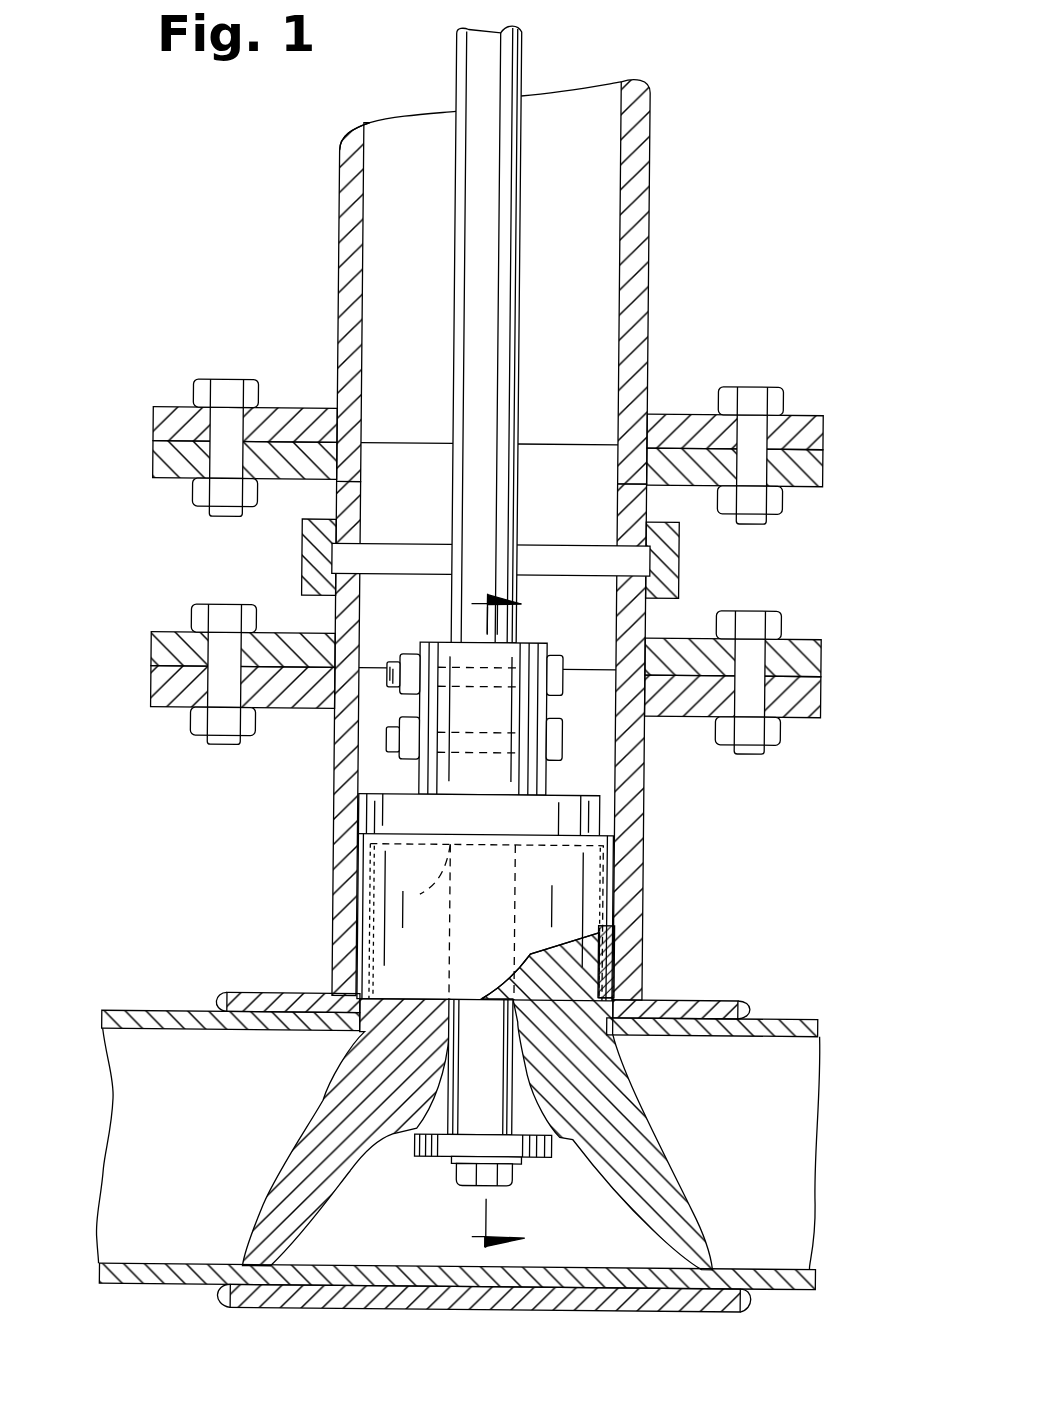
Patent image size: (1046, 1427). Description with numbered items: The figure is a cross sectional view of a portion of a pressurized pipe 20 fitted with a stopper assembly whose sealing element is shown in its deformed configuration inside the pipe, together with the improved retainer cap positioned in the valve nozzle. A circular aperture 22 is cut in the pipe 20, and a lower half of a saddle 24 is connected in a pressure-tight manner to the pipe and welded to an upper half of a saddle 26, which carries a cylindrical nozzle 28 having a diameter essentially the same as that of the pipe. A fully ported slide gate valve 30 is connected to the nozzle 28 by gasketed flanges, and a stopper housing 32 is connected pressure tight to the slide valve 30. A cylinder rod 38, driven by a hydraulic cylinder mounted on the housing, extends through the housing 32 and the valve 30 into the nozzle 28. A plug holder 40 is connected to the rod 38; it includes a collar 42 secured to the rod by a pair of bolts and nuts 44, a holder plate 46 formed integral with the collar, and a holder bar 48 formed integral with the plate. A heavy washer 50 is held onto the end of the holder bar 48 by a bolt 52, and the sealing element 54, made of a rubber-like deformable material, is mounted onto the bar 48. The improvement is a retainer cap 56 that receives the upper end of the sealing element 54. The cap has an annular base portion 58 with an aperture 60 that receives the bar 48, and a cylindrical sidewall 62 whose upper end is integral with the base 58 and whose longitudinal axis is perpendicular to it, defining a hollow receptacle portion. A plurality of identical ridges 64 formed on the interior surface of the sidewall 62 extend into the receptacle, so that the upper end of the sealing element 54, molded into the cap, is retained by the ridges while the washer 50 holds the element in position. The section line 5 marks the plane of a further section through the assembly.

The section line 5- 5 is at (510, 921).
The pipe 20 is at (192, 1008).
The circular aperture 22 is at (372, 993).
The lower half of a saddle 24 is at (683, 1300).
The upper half of a saddle 26 is at (708, 994).
The cylindrical nozzle 28 is at (635, 815).
The slide gate valve 30 is at (689, 554).
The stopper housing 32 is at (628, 227).
The cylinder rod 38 is at (483, 220).
The plug holder 40 is at (410, 640).
The collar 42 is at (509, 691).
The bolts and nuts 44 is at (410, 739).
The holder plate 46 is at (438, 817).
The holder bar 48 is at (481, 1076).
The washer 50 is at (494, 1146).
The bolt 52 is at (485, 1172).
The sealing element 54 is at (624, 1140).
The retainer cap 56 is at (361, 927).
The annular base portion 58 is at (619, 884).
The aperture 60 is at (375, 896).
The cylindrical sidewall 62 is at (613, 944).
The ridges 64 is at (603, 938).